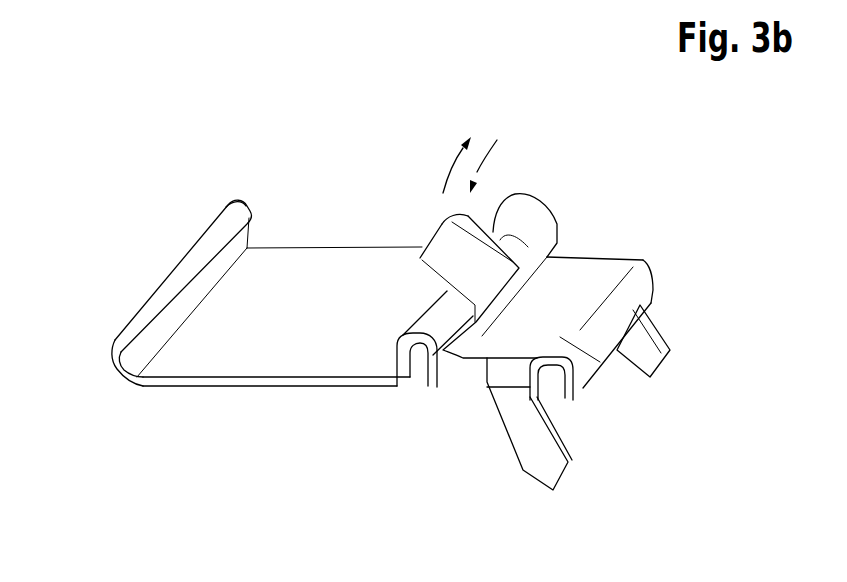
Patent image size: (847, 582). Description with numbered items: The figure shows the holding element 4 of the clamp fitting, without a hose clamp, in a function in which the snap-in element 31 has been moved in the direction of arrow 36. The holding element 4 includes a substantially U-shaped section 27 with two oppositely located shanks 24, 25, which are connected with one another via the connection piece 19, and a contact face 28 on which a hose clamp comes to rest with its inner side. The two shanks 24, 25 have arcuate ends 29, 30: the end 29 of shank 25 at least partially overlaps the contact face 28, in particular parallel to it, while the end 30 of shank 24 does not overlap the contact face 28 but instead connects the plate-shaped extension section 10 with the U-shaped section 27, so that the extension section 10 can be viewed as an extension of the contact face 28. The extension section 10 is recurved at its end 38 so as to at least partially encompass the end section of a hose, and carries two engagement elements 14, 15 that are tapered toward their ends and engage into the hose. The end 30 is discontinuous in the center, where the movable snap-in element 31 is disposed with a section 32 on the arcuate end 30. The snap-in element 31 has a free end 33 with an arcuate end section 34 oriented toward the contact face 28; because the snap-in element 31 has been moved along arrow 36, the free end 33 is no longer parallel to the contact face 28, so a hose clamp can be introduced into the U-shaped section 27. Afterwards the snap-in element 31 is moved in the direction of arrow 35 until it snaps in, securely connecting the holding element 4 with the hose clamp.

The holding element 4 is at (283, 213).
The extension section 10 is at (562, 370).
The engagement element 14 is at (518, 466).
The engagement element 15 is at (672, 355).
The connection piece 19 is at (306, 388).
The shank 24 is at (405, 357).
The shank 25 is at (118, 370).
The U-shaped section 27 is at (222, 392).
The contact face 28 is at (183, 357).
The end 29 is at (172, 277).
The end 30 is at (417, 342).
The snap-in element 31 is at (437, 216).
The section 32 is at (547, 245).
The free end 33 is at (420, 256).
The end section 34 is at (422, 252).
The arrow 35 is at (483, 160).
The arrow 36 is at (443, 193).
The end 38 is at (603, 363).